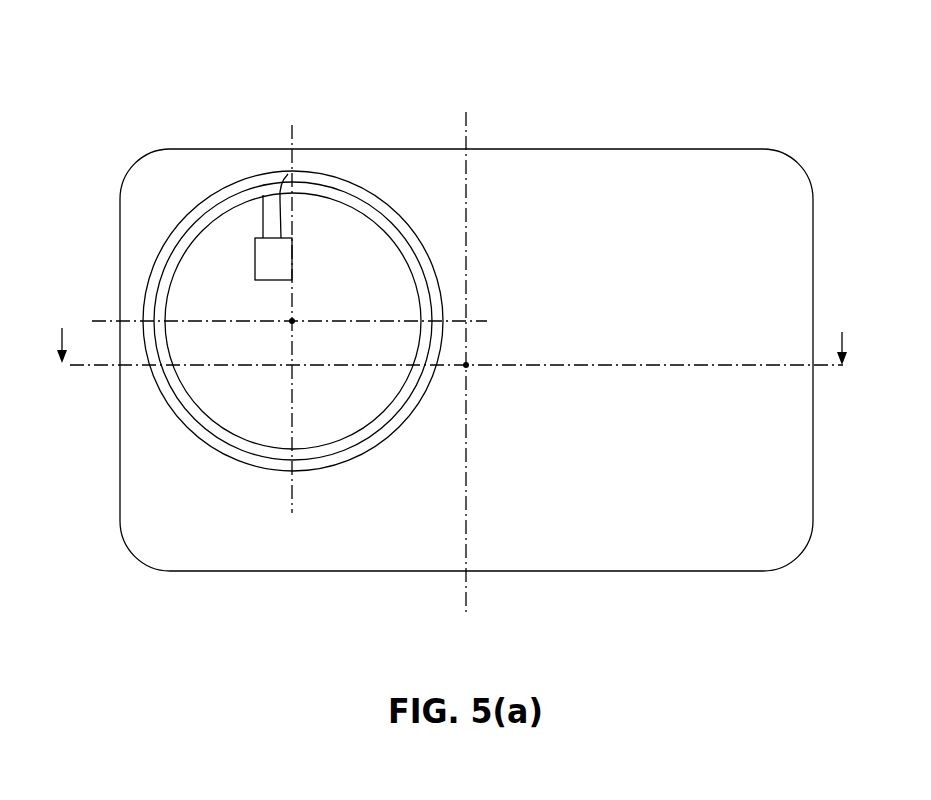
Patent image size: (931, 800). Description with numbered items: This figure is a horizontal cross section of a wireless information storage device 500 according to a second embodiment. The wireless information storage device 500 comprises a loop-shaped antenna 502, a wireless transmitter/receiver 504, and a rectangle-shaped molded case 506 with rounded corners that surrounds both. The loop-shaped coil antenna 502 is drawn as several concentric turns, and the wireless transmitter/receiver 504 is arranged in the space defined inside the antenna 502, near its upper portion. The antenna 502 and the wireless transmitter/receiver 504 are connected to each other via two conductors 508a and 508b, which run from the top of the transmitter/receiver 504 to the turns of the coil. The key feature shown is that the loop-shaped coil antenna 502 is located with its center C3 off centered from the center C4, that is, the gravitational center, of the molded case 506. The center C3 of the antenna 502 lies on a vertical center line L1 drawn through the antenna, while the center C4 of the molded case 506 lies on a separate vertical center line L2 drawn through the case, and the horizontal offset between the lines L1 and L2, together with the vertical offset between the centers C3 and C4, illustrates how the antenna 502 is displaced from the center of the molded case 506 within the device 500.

The wireless information storage device 500 is at (480, 99).
The loop-shaped antenna 502 is at (420, 280).
The wireless transmitter/receiver 504 is at (272, 281).
The molded case 506 is at (503, 562).
The conductor 508a is at (253, 204).
The conductor 508b is at (290, 214).
The center line of antenna L1 is at (290, 472).
The center line of molded case L2 is at (463, 587).
The center of antenna C3 is at (289, 325).
The center of molded case C4 is at (468, 368).